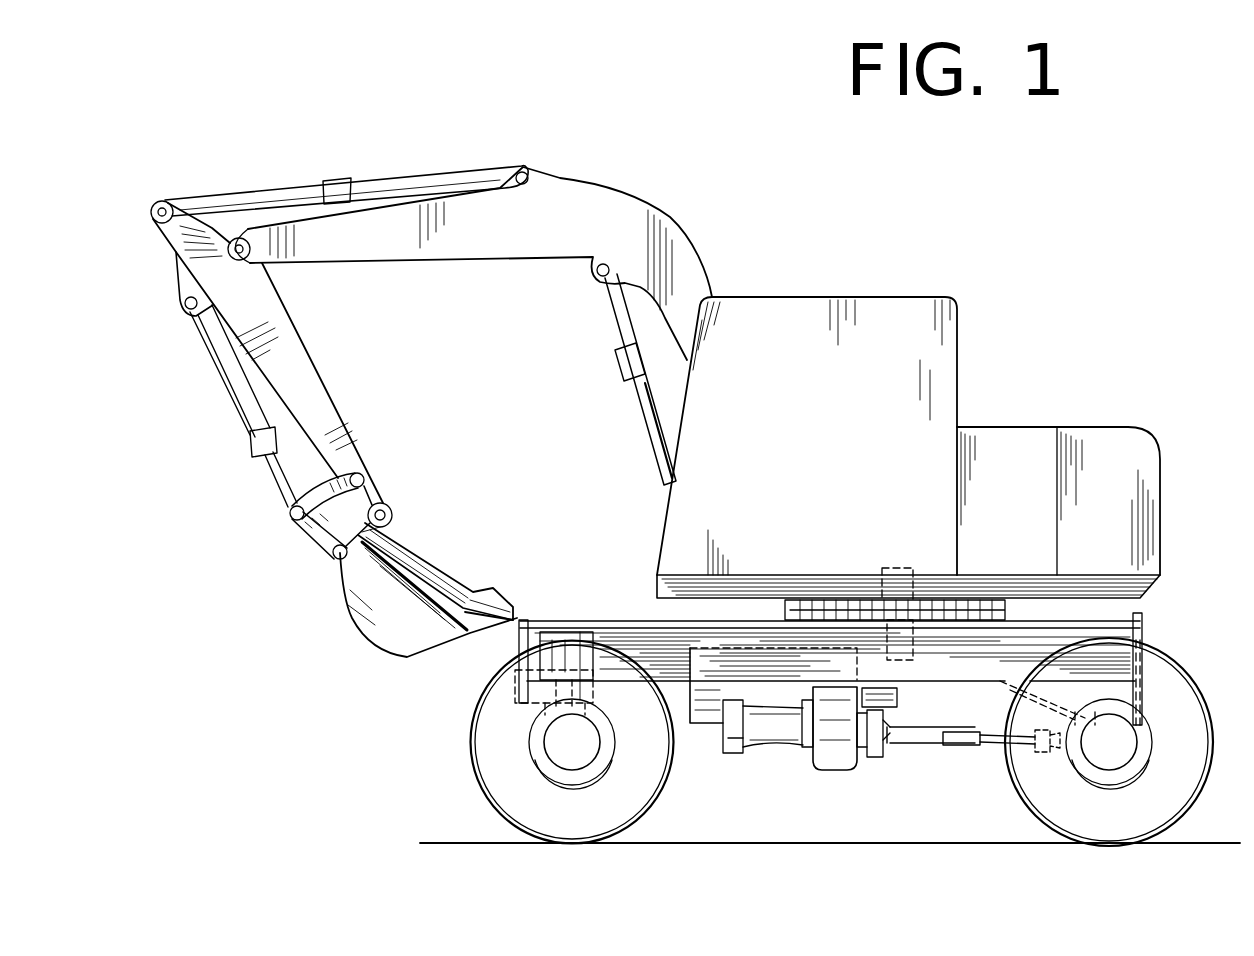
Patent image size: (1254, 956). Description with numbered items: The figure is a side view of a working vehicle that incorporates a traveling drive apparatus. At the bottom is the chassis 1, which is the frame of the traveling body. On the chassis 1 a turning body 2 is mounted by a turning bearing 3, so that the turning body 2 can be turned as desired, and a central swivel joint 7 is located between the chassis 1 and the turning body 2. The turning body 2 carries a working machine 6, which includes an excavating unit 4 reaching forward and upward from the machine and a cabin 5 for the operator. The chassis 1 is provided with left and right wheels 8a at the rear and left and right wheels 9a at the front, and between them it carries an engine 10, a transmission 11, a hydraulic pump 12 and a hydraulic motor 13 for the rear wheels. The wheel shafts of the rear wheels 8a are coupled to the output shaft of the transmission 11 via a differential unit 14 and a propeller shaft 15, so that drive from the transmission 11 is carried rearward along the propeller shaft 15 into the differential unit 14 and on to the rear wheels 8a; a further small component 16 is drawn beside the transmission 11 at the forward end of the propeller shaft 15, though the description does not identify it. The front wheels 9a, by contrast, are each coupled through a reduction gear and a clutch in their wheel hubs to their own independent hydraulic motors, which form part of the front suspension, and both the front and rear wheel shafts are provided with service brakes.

The chassis 1 is at (1143, 621).
The turning body 2 is at (1160, 590).
The turning bearing 3 is at (980, 598).
The excavating unit 4 is at (612, 182).
The cabin 5 is at (852, 300).
The working machine 6 is at (1013, 315).
The central swivel joint 7 is at (881, 567).
The left hand side rear wheel 8a is at (1118, 830).
The left hand side front wheel 9a is at (600, 830).
The engine 10 is at (703, 735).
The transmission 11 is at (832, 762).
The hydraulic pump 12 is at (897, 697).
The hydraulic motor 13 is at (743, 766).
The differential unit 14 is at (1060, 755).
The propeller shaft 15 is at (962, 750).
The clutch 16 is at (880, 758).